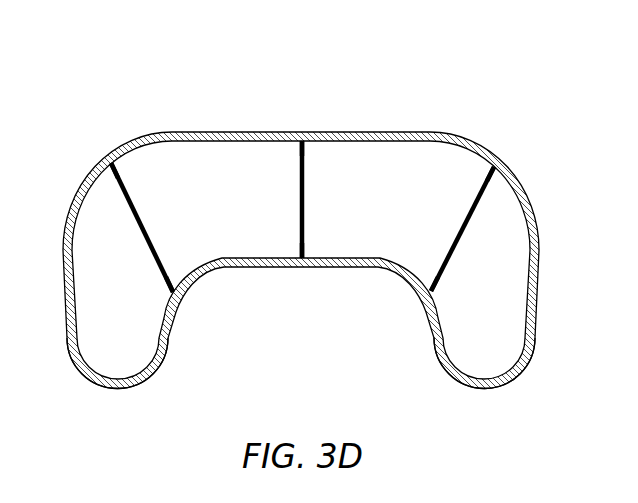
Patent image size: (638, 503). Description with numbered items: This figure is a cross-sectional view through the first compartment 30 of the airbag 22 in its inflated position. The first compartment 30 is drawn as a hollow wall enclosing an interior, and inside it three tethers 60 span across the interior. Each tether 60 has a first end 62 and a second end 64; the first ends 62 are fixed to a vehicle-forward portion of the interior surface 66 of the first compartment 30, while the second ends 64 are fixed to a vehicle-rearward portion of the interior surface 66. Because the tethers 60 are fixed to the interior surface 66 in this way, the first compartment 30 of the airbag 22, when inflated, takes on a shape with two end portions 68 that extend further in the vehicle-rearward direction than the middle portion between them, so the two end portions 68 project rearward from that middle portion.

The airbag 22 is at (113, 77).
The first compartment 30 is at (403, 114).
The tether 60 is at (157, 229).
The first end 62 is at (113, 165).
The second end 64 is at (300, 256).
The interior surface 66 is at (220, 141).
The end portion 68 is at (114, 395).